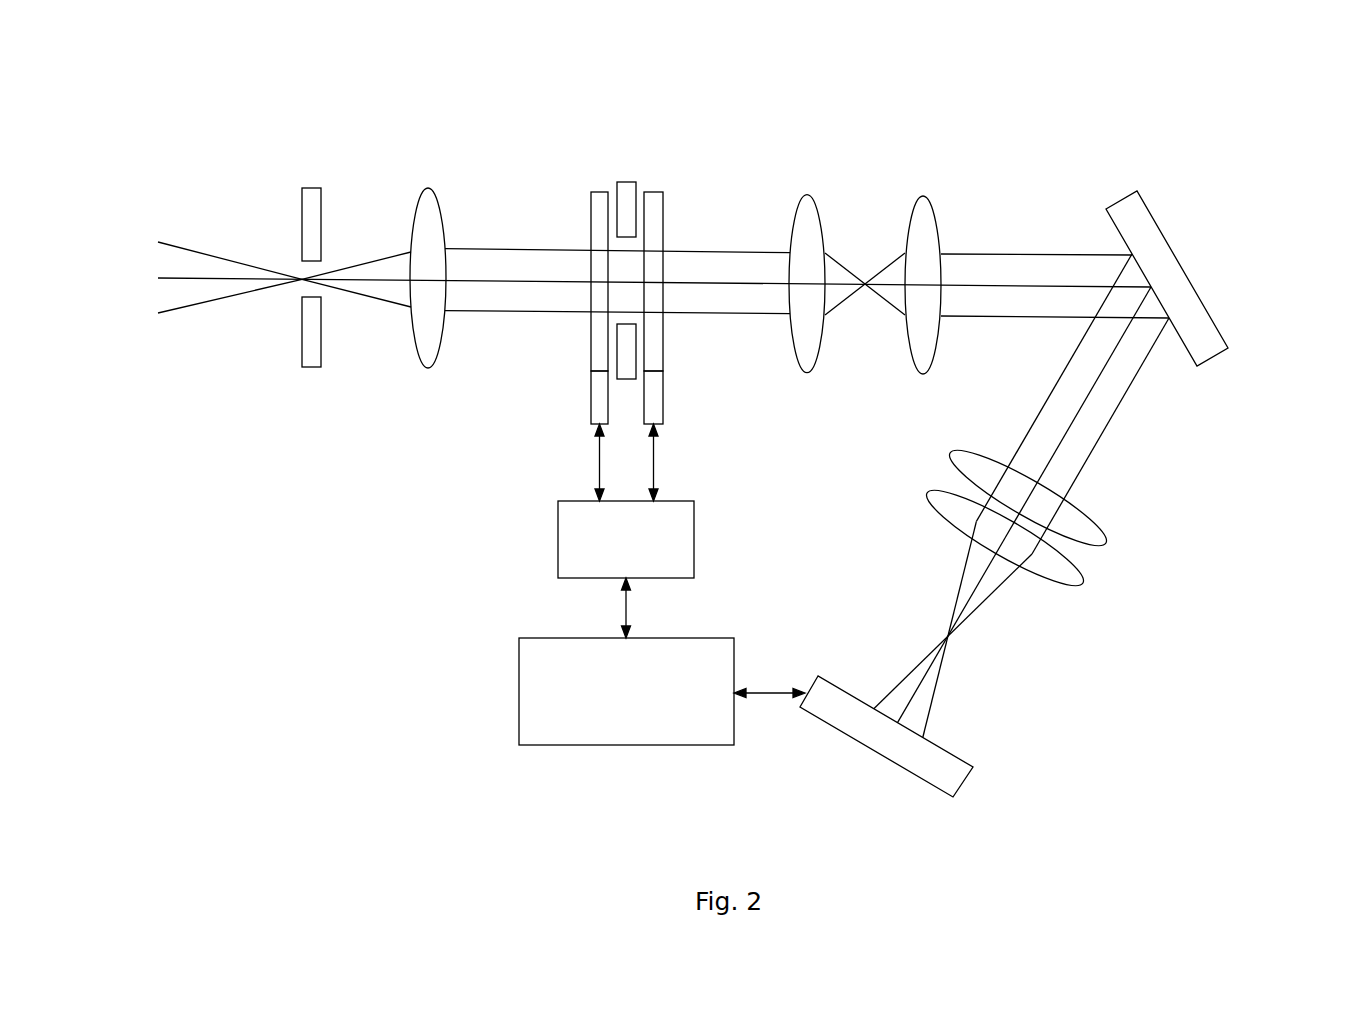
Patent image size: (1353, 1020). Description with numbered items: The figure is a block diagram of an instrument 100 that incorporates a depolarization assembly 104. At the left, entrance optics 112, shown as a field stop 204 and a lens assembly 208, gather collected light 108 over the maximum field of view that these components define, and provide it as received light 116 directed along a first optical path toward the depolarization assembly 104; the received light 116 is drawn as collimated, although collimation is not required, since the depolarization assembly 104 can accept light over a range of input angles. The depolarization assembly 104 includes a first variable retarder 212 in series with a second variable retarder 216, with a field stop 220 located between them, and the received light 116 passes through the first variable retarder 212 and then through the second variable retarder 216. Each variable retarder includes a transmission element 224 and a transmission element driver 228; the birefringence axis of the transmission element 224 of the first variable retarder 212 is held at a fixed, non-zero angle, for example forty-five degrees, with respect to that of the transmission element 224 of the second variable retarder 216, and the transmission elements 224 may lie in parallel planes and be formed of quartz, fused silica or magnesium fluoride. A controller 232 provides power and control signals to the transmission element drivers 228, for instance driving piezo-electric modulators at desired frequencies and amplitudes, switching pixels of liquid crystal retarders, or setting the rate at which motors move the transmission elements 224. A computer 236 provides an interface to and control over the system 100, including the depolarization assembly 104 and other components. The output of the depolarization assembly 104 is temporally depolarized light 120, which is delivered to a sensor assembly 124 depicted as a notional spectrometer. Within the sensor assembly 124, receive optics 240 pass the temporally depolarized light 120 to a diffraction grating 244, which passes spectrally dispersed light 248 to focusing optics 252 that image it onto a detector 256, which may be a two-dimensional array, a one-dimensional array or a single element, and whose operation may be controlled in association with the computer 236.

The instrument 100 is at (1042, 89).
The depolarization assembly 104 is at (645, 158).
The collected light 108 is at (186, 243).
The entrance optics 112 is at (297, 286).
The received light 116 is at (508, 248).
The temporally depolarized light 120 is at (743, 250).
The sensor assembly 124 is at (1187, 245).
The field stop 204 is at (312, 188).
The lens assembly 208 is at (428, 190).
The first variable retarder 212 is at (613, 313).
The second variable retarder 216 is at (670, 208).
The field stop 220 is at (642, 229).
The transmission element 224 is at (628, 255).
The transmission element driver 228 is at (591, 410).
The controller 232 is at (558, 537).
The computer 236 is at (519, 693).
The receive optics 240 is at (867, 155).
The diffraction grating 244 is at (1195, 297).
The spectrally dispersed light 248 is at (1108, 428).
The focusing optics 252 is at (1120, 592).
The detector 256 is at (840, 735).